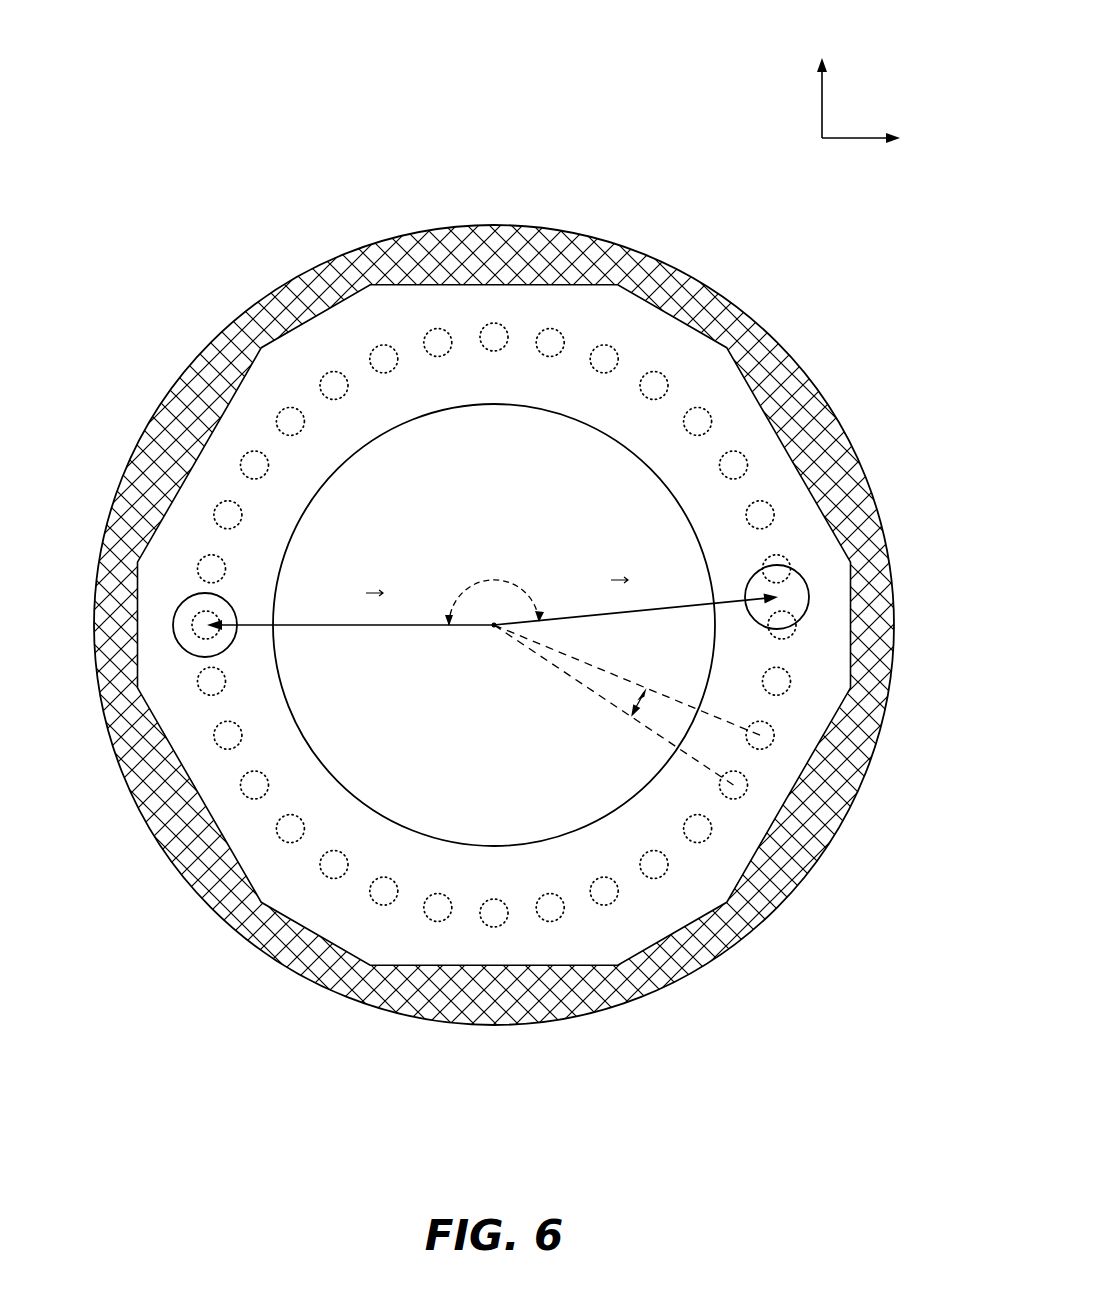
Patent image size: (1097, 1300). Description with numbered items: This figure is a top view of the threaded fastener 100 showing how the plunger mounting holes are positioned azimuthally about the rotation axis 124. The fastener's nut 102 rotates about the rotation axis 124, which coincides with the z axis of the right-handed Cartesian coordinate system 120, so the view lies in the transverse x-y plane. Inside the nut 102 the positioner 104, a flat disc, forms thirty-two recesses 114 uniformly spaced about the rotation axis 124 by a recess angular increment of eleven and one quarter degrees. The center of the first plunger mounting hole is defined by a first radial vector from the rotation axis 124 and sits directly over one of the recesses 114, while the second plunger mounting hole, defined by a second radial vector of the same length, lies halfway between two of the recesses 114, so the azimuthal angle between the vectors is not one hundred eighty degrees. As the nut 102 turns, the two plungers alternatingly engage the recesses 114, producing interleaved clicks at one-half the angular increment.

The threaded fastener 100 is at (124, 148).
The nut 102 is at (321, 986).
The positioner 104 is at (253, 947).
The recesses 114 is at (306, 805).
The right-handed Cartesian coordinate system 120 is at (885, 55).
The rotation axis 124 is at (493, 629).